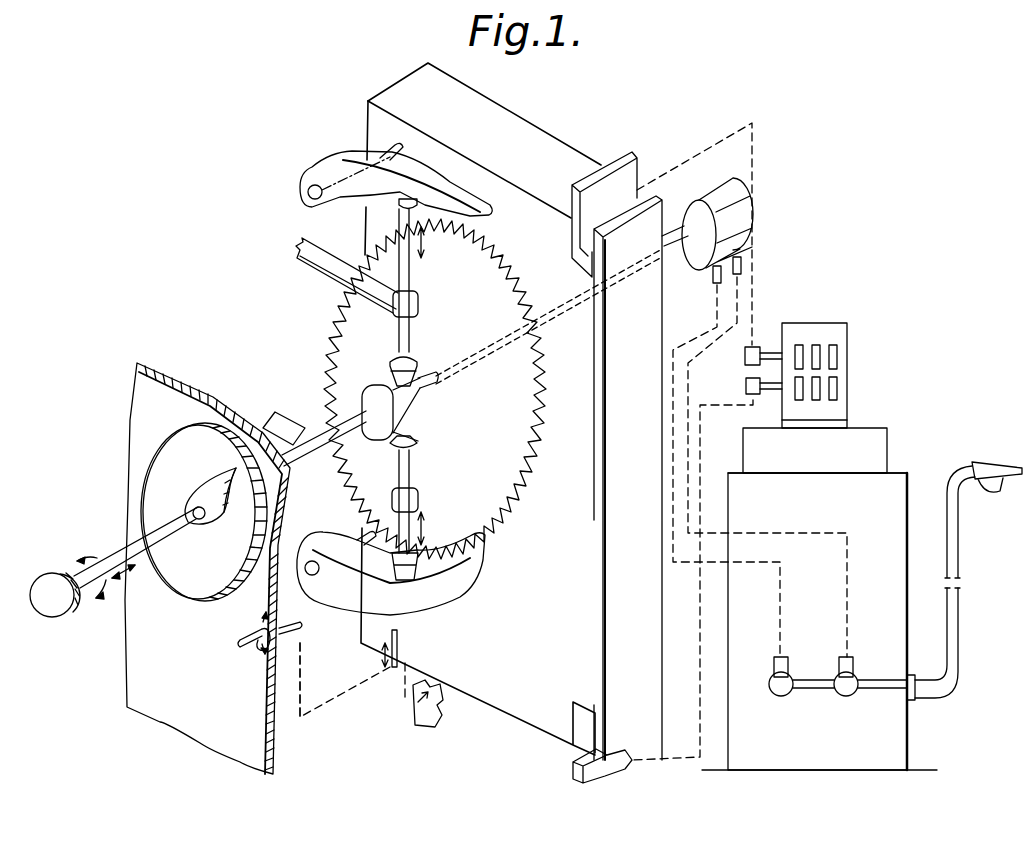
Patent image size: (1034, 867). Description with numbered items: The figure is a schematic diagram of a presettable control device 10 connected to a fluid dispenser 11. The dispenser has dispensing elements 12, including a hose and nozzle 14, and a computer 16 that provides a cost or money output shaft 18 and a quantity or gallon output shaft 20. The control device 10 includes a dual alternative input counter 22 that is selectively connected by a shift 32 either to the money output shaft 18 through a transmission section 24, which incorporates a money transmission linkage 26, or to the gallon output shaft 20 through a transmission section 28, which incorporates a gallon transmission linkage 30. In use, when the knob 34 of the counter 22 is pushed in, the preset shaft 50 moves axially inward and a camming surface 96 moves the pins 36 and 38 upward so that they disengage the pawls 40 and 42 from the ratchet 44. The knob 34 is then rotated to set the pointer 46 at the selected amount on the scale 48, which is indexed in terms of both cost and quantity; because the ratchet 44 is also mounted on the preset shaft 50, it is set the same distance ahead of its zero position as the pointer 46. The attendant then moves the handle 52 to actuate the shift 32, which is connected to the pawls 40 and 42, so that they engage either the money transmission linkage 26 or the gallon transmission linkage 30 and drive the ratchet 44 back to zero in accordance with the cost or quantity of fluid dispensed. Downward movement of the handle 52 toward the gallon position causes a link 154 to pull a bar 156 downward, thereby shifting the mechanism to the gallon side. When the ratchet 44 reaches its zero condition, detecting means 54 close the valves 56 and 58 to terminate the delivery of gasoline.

The presettable control device 10 is at (192, 351).
The fluid dispenser 11 is at (908, 488).
The dispensing elements 12 is at (893, 539).
The hose and nozzle 14 is at (958, 618).
The computer 16 is at (835, 419).
The money output shaft 18 is at (769, 347).
The gallon output shaft 20 is at (773, 396).
The dual alternative input counter 22 is at (282, 262).
The transmission section 24 is at (745, 357).
The money transmission linkage 26 is at (630, 178).
The transmission section 28 is at (746, 387).
The gallon transmission linkage 30 is at (572, 773).
The shift 32 is at (647, 319).
The knob 34 is at (57, 617).
The pin 36 is at (408, 276).
The pin 38 is at (411, 478).
The pawl 40 is at (337, 170).
The pawl 42 is at (348, 593).
The ratchet 44 is at (490, 487).
The pointer 46 is at (194, 530).
The scale 48 is at (186, 592).
The preset shaft 50 is at (310, 447).
The handle 52 is at (243, 652).
The detecting means 54 is at (748, 252).
The valve 56 is at (783, 697).
The valve 58 is at (851, 697).
The camming surface 96 is at (415, 410).
The link 154 is at (322, 700).
The bar 156 is at (398, 662).